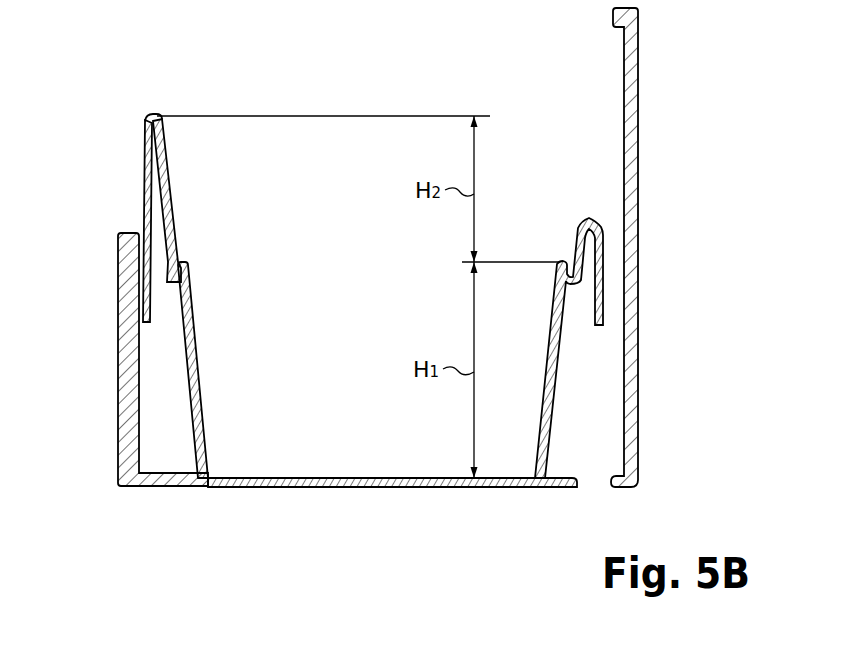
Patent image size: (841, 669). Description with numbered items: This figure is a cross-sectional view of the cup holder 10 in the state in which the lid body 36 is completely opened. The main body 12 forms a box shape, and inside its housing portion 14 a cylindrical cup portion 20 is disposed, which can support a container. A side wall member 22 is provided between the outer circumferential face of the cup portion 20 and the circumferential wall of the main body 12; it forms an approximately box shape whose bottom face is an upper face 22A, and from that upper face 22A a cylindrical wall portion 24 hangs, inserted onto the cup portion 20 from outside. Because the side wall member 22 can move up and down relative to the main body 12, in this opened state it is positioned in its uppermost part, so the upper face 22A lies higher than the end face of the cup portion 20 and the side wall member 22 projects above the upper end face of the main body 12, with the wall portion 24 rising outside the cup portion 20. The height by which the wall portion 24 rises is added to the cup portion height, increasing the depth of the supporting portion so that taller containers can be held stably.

The cup holder 10 is at (663, 247).
The main body 12 is at (112, 391).
The housing portion 14 is at (172, 447).
The cup portion 20 is at (197, 360).
The side wall member 22 is at (135, 200).
The upper face 22A is at (148, 115).
The wall portion 24 is at (166, 175).
The lid body 36 is at (639, 166).